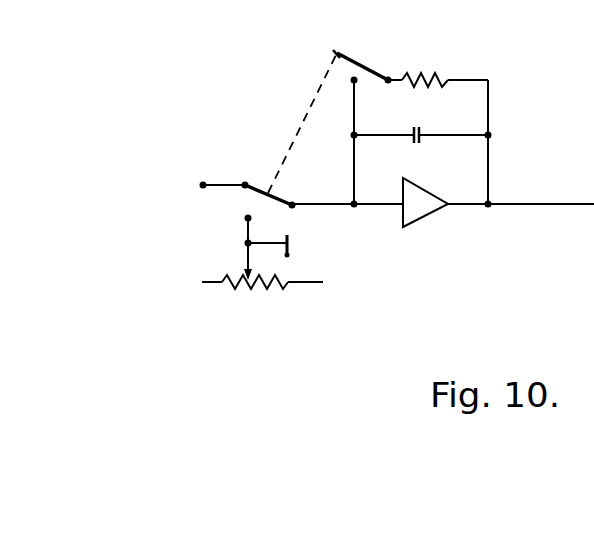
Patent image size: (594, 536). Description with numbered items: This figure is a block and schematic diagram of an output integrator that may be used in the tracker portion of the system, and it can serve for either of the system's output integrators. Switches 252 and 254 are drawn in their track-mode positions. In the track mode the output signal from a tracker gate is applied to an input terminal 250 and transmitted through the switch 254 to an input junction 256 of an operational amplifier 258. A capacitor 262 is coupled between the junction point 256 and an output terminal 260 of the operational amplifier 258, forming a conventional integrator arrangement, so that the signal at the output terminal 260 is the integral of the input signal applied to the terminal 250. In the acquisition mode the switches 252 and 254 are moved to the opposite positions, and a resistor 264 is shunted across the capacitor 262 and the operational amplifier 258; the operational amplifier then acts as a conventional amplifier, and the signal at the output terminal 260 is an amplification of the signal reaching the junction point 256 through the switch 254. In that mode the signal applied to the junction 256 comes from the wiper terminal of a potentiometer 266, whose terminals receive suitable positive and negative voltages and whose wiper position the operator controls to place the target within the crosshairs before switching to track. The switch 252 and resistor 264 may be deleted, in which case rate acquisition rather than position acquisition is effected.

The input terminal 250 is at (204, 182).
The switch 252 is at (362, 63).
The switch 254 is at (267, 181).
The input junction 256 is at (354, 207).
The operational amplifier 258 is at (430, 215).
The output terminal 260 is at (560, 204).
The capacitor 262 is at (425, 127).
The resistor 264 is at (447, 76).
The potentiometer 266 is at (268, 285).